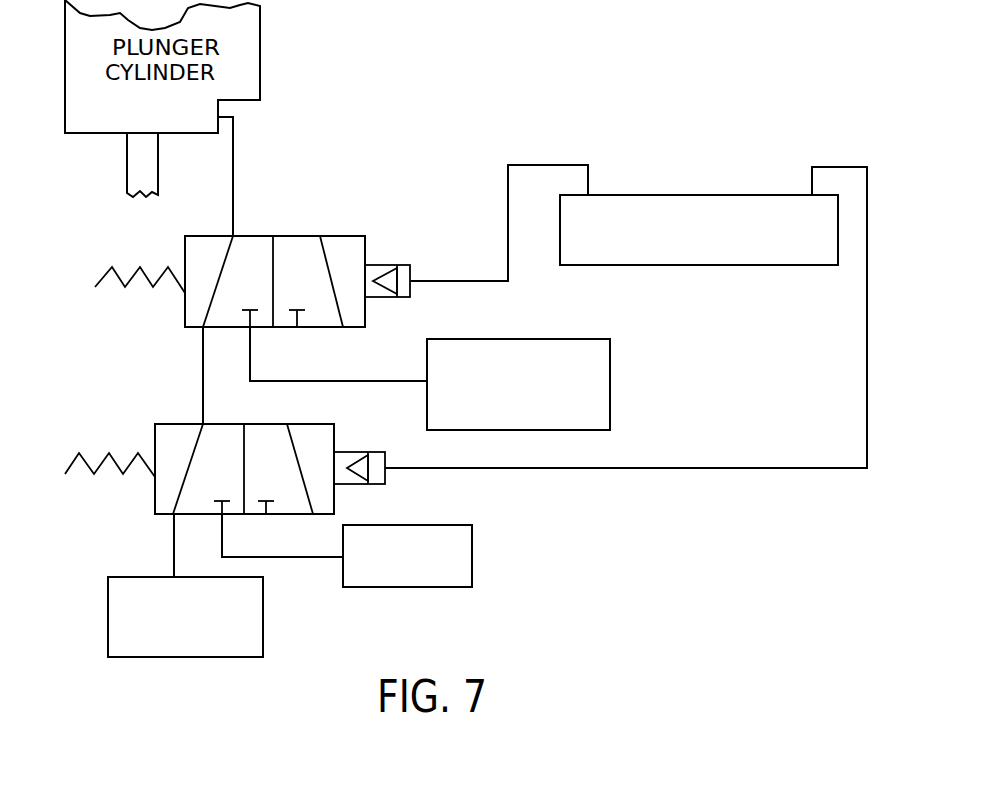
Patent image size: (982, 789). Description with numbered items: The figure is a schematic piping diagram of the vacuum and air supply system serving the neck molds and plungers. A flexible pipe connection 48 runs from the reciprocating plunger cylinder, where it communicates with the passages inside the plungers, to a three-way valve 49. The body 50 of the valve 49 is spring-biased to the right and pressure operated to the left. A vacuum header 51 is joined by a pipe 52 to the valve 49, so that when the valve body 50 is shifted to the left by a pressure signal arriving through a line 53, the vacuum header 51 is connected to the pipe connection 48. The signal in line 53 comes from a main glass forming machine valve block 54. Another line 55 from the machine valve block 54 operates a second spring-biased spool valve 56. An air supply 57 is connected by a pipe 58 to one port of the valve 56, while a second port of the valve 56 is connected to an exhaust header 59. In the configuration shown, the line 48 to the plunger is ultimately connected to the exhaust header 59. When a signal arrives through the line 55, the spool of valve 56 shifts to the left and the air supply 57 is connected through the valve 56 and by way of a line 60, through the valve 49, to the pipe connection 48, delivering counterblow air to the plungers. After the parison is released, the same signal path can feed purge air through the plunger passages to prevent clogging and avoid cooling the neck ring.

The pipe connection 48 is at (233, 173).
The three-way valve 49 is at (232, 254).
The valve body 50 is at (295, 235).
The vacuum header 51 is at (610, 386).
The pipe 52 is at (323, 381).
The line 53 is at (454, 280).
The machine valve block 54 is at (657, 195).
The line 55 is at (704, 468).
The spool valve 56 is at (132, 551).
The air supply 57 is at (472, 545).
The pipe 58 is at (275, 557).
The exhaust header 59 is at (192, 657).
The line 60 is at (203, 379).